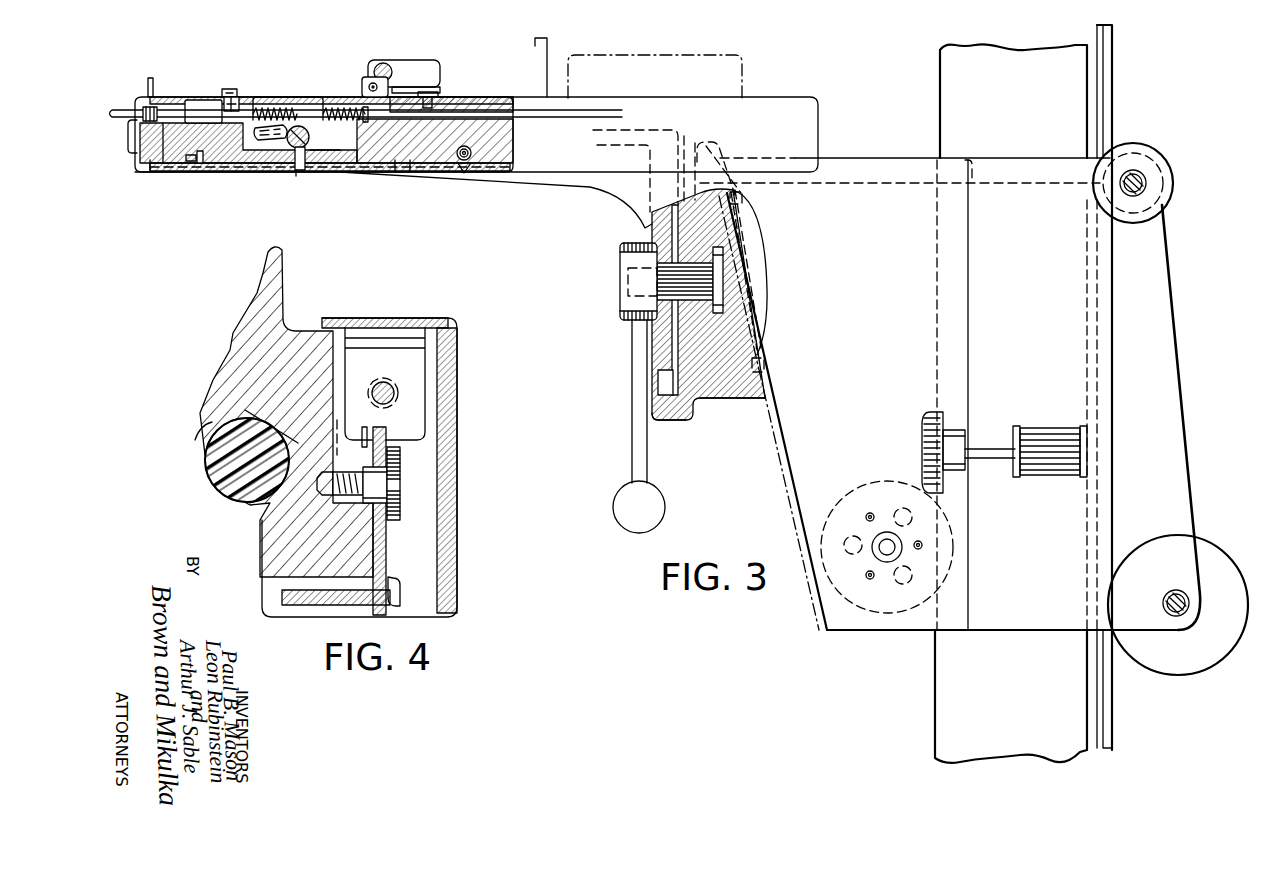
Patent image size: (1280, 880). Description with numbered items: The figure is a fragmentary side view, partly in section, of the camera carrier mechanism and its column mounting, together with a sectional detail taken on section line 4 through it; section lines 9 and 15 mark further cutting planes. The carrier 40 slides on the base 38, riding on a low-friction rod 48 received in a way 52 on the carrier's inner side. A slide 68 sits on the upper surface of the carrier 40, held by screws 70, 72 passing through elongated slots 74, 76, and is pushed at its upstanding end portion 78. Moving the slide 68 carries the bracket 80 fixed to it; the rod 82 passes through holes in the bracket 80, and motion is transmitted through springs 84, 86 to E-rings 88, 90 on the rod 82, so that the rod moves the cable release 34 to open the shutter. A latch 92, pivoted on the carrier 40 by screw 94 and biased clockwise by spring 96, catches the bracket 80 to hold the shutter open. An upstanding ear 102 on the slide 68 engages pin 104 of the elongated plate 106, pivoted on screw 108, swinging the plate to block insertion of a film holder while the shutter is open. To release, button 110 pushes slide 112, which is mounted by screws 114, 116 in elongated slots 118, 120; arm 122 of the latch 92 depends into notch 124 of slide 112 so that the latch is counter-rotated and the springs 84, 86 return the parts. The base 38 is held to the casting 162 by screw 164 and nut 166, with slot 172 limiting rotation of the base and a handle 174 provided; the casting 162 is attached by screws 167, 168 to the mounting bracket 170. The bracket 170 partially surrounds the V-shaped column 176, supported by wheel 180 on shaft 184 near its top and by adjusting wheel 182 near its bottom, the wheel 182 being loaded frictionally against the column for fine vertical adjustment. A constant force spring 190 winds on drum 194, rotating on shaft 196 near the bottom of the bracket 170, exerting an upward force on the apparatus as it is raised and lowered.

In FIG. 3, the cable release 34 is at (593, 119).
In FIG. 3, the base 38 is at (658, 422).
In FIG. 4, the carrier 40 is at (285, 318).
In FIG. 4, the rod 48 is at (238, 500).
In FIG. 4, the way 52 is at (205, 448).
In FIG. 3, the slide 68 is at (176, 96).
In FIG. 4, the slide 68 is at (445, 318).
In FIG. 3, the screw 70 is at (226, 92).
In FIG. 3, the screw 72 is at (440, 96).
In FIG. 3, the elongated slot 74 is at (223, 94).
In FIG. 3, the elongated slot 76 is at (432, 92).
In FIG. 3, the upstanding end portion 78 is at (150, 92).
In FIG. 3, the bracket 80 is at (236, 96).
In FIG. 4, the bracket 80 is at (418, 430).
In FIG. 3, the rod 82 is at (310, 138).
In FIG. 4, the rod 82 is at (383, 383).
In FIG. 3, the spring 84 is at (272, 107).
In FIG. 3, the spring 86 is at (364, 108).
In FIG. 3, the E-ring 88 is at (324, 108).
In FIG. 3, the E-ring 90 is at (352, 138).
In FIG. 3, the latch 92 is at (252, 139).
In FIG. 4, the latch 92 is at (386, 530).
In FIG. 3, the screw 94 is at (325, 168).
In FIG. 4, the screw 94 is at (396, 487).
In FIG. 3, the spring 96 is at (205, 164).
In FIG. 3, the upstanding ear 102 is at (400, 90).
In FIG. 3, the pin 104 is at (370, 84).
In FIG. 3, the elongated plate 106 is at (432, 75).
In FIG. 3, the screw 108 is at (387, 67).
In FIG. 3, the button 110 is at (130, 148).
In FIG. 3, the slide 112 is at (386, 178).
In FIG. 4, the slide 112 is at (312, 605).
In FIG. 3, the screw 114 is at (194, 163).
In FIG. 3, the screw 116 is at (424, 170).
In FIG. 3, the elongated slot 118 is at (168, 168).
In FIG. 3, the elongated slot 120 is at (398, 172).
In FIG. 3, the arm 122 is at (293, 170).
In FIG. 4, the arm 122 is at (391, 584).
In FIG. 3, the notch 124 is at (298, 170).
In FIG. 3, the casting 162 is at (692, 408).
In FIG. 3, the screw 164 is at (714, 286).
In FIG. 3, the nut 166 is at (682, 304).
In FIG. 3, the screw 167 is at (730, 212).
In FIG. 3, the screw 168 is at (764, 366).
In FIG. 3, the mounting bracket 170 is at (887, 233).
In FIG. 3, the slot 172 is at (660, 383).
In FIG. 3, the handle 174 is at (632, 445).
In FIG. 3, the V-shaped column 176 is at (1075, 102).
In FIG. 3, the wheel 180 is at (1170, 172).
In FIG. 3, the adjusting wheel 182 is at (880, 602).
In FIG. 3, the shaft 184 is at (1146, 190).
In FIG. 3, the constant force spring 190 is at (1113, 75).
In FIG. 3, the drum 194 is at (1228, 606).
In FIG. 3, the shaft 196 is at (1180, 616).
In FIG. 3, the section line 4— 4 is at (335, 197).
In FIG. 3, the section line 9— 9 is at (555, 345).
In FIG. 3, the section line 15— 15 is at (1152, 452).